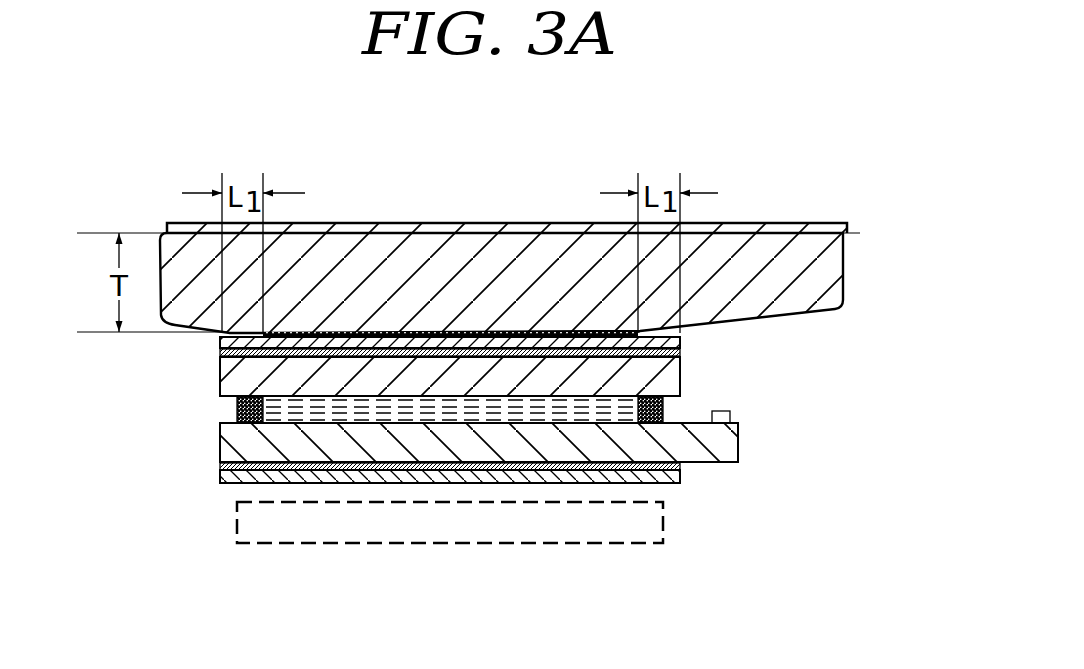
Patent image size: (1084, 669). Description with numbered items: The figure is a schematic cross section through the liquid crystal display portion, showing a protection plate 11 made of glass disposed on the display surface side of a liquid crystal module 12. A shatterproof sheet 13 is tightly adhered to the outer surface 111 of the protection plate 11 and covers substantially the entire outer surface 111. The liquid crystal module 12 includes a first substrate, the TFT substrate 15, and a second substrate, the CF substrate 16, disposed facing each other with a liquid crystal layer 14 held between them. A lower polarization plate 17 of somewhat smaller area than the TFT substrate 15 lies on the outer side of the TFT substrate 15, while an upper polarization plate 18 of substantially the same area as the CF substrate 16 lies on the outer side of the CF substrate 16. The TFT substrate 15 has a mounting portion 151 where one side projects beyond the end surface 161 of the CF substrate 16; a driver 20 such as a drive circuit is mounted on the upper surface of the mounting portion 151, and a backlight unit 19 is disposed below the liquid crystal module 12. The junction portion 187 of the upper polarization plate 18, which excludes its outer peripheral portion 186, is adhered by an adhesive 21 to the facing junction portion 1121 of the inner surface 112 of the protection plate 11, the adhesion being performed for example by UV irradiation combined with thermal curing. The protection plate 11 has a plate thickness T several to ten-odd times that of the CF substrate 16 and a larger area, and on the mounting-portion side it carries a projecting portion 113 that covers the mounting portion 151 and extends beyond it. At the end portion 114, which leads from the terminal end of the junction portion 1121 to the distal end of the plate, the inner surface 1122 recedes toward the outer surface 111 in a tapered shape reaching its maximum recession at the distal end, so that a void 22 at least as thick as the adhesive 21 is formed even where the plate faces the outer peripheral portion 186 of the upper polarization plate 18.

The protection plate 11 is at (815, 242).
The outer surface 111 is at (393, 243).
The inner surface 112 is at (313, 337).
The junction portion 1121 is at (487, 332).
The inner surface of end portion 1122 is at (800, 313).
The projecting portion 113 is at (832, 268).
The end portion 114 is at (183, 248).
The liquid crystal module 12 is at (198, 417).
The shatterproof sheet 13 is at (587, 232).
The liquid crystal layer 14 is at (553, 417).
The first substrate (TFT substrate) 15 is at (220, 447).
The mounting portion 151 is at (727, 425).
The second substrate (CF substrate) 16 is at (220, 370).
The end surface 161 is at (682, 362).
The lower polarization plate 17 is at (220, 475).
The upper polarization plate 18 is at (683, 338).
The outer peripheral portion 186 is at (637, 338).
The junction portion 187 is at (445, 343).
The backlight unit 19 is at (322, 545).
The driver 20 is at (730, 415).
The adhesive 21 is at (430, 332).
The void 22 is at (217, 340).